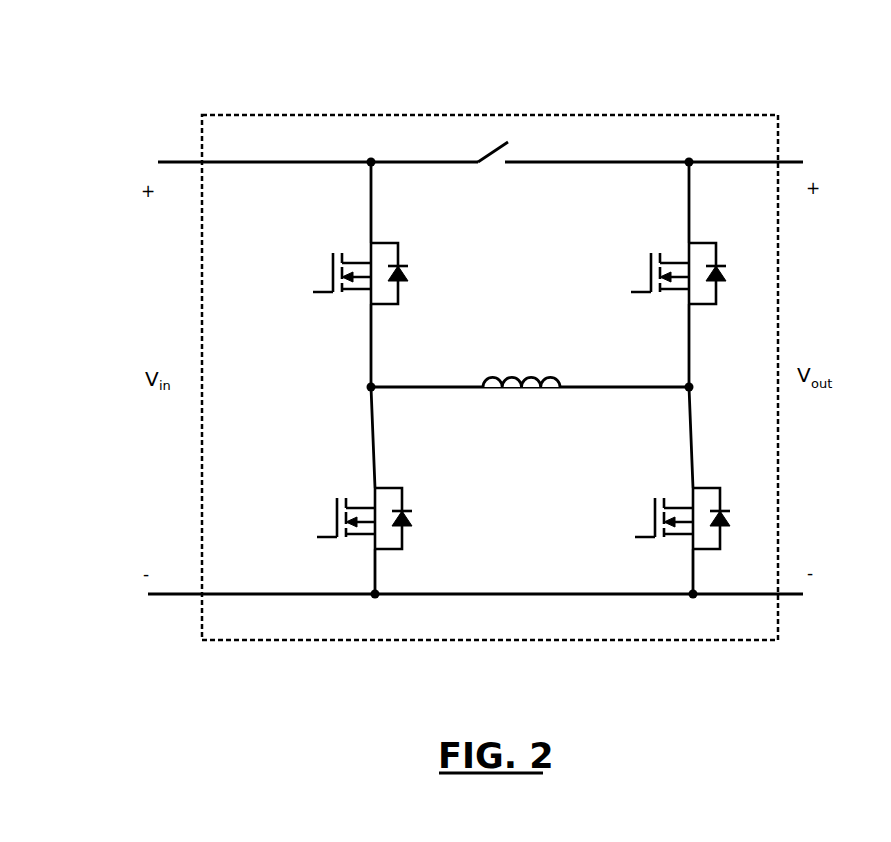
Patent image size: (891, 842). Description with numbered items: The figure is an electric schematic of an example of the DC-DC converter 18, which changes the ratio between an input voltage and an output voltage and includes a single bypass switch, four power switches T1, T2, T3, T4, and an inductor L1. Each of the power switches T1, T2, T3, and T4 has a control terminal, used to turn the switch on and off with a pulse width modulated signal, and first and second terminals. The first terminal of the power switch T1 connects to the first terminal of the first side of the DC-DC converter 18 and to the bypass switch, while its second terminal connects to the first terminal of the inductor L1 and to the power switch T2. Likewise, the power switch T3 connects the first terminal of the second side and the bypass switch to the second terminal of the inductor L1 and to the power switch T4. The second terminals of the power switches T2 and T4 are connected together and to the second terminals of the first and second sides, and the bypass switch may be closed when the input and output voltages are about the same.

The DC-DC converter 18 is at (362, 115).
The power switch T1 is at (358, 260).
The power switch T2 is at (360, 509).
The power switch T3 is at (674, 265).
The power switch T4 is at (680, 509).
The inductor L1 is at (521, 369).